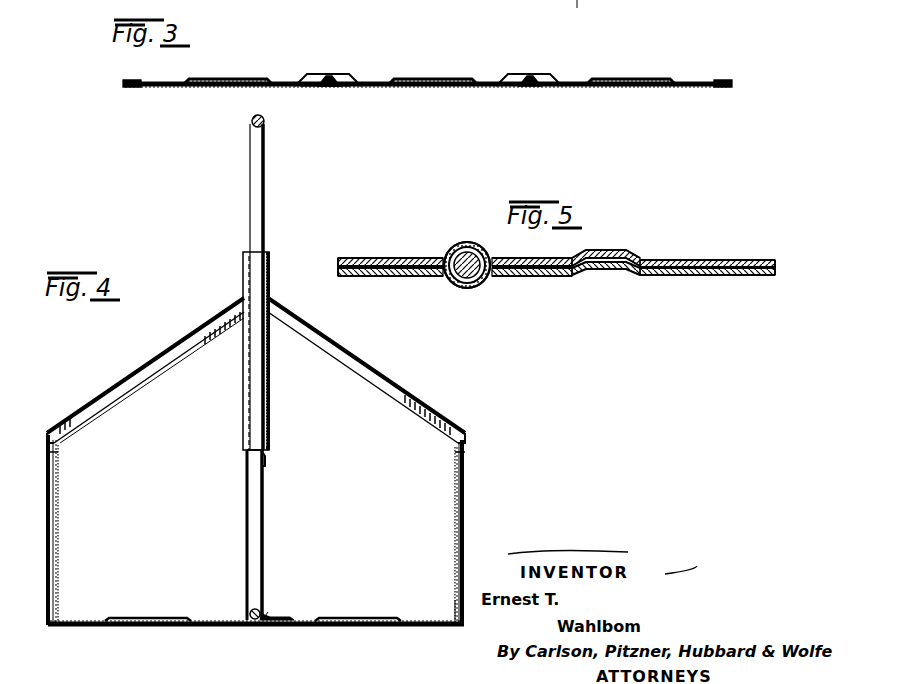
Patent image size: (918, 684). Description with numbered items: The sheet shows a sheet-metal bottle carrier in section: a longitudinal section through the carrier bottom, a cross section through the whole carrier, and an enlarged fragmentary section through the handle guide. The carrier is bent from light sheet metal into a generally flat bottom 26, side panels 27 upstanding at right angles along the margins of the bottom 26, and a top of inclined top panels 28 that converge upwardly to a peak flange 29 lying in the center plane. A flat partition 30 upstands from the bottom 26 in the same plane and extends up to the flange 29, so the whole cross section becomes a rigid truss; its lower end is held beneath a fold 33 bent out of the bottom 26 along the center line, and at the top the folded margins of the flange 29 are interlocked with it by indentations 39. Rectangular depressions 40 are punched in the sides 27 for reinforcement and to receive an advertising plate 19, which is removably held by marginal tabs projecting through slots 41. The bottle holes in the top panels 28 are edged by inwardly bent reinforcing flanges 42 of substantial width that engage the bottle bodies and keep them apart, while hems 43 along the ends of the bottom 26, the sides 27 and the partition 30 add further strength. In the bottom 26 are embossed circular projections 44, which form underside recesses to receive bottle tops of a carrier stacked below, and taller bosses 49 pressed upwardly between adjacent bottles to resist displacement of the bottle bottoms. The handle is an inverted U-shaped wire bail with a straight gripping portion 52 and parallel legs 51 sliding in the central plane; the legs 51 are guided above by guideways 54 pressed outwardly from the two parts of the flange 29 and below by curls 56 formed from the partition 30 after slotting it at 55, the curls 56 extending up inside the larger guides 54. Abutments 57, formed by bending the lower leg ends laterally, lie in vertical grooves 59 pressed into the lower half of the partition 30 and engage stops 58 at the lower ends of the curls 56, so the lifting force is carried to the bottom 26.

In FIG. 4, the advertising plate 19 is at (48, 522).
In FIG. 3, the bottom 26 is at (680, 88).
In FIG. 4, the bottom 26 is at (182, 628).
In FIG. 4, the side panels 27 is at (44, 447).
In FIG. 4, the top panels 28 is at (148, 364).
In FIG. 5, the flange 29 is at (390, 256).
In FIG. 5, the partition 30 is at (550, 278).
In FIG. 4, the fold 33 is at (280, 614).
In FIG. 5, the indentations 39 is at (610, 252).
In FIG. 4, the rectangular depressions 40 is at (58, 548).
In FIG. 4, the slots 41 is at (58, 458).
In FIG. 4, the flanges 42 is at (150, 405).
In FIG. 3, the hems 43 is at (136, 81).
In FIG. 3, the circular projections 44 is at (242, 79).
In FIG. 4, the circular projections 44 is at (148, 618).
In FIG. 3, the bosses 49 is at (324, 76).
In FIG. 4, the handle legs 51 is at (250, 178).
In FIG. 5, the handle legs 51 is at (470, 278).
In FIG. 4, the gripping portion 52 is at (251, 122).
In FIG. 4, the upper guides 54 is at (270, 250).
In FIG. 5, the upper guides 54 is at (462, 242).
In FIG. 5, the slots 55 is at (396, 278).
In FIG. 4, the curls 56 is at (270, 410).
In FIG. 5, the curls 56 is at (450, 248).
In FIG. 4, the abutments 57 is at (261, 608).
In FIG. 4, the stops 58 is at (265, 465).
In FIG. 4, the vertical grooves 59 is at (259, 492).